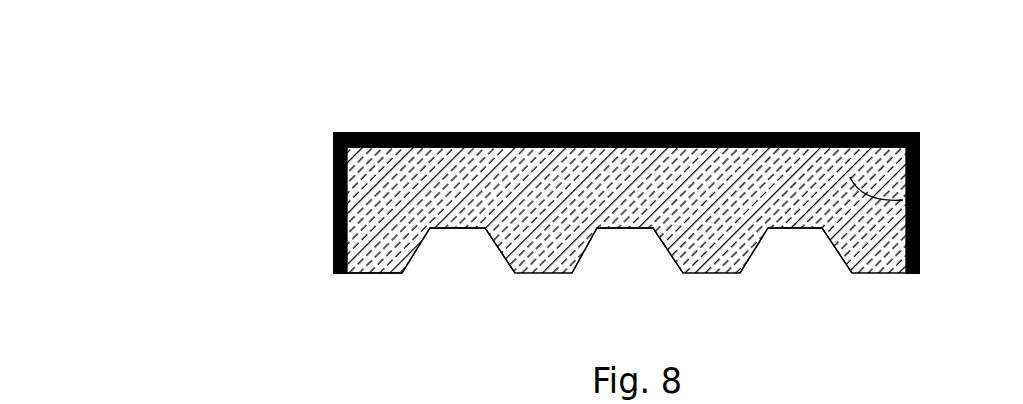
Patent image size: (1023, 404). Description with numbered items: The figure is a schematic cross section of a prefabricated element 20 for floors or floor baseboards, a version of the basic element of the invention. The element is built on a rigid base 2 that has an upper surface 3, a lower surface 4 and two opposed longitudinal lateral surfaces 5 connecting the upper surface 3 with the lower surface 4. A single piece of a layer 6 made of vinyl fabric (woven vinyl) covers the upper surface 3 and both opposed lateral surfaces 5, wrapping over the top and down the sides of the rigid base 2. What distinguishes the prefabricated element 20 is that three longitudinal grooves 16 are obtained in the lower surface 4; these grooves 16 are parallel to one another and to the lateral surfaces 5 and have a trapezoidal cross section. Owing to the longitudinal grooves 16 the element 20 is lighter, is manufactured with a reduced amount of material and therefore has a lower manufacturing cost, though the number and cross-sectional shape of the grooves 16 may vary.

The prefabricated element 20 is at (588, 189).
The rigid base 2 is at (920, 187).
The upper surface 3 is at (780, 132).
The lower surface 4 is at (377, 273).
The lateral surface 5 is at (333, 215).
The layer made of vinyl fabric 6 is at (520, 132).
The longitudinal grooves 16 is at (465, 238).